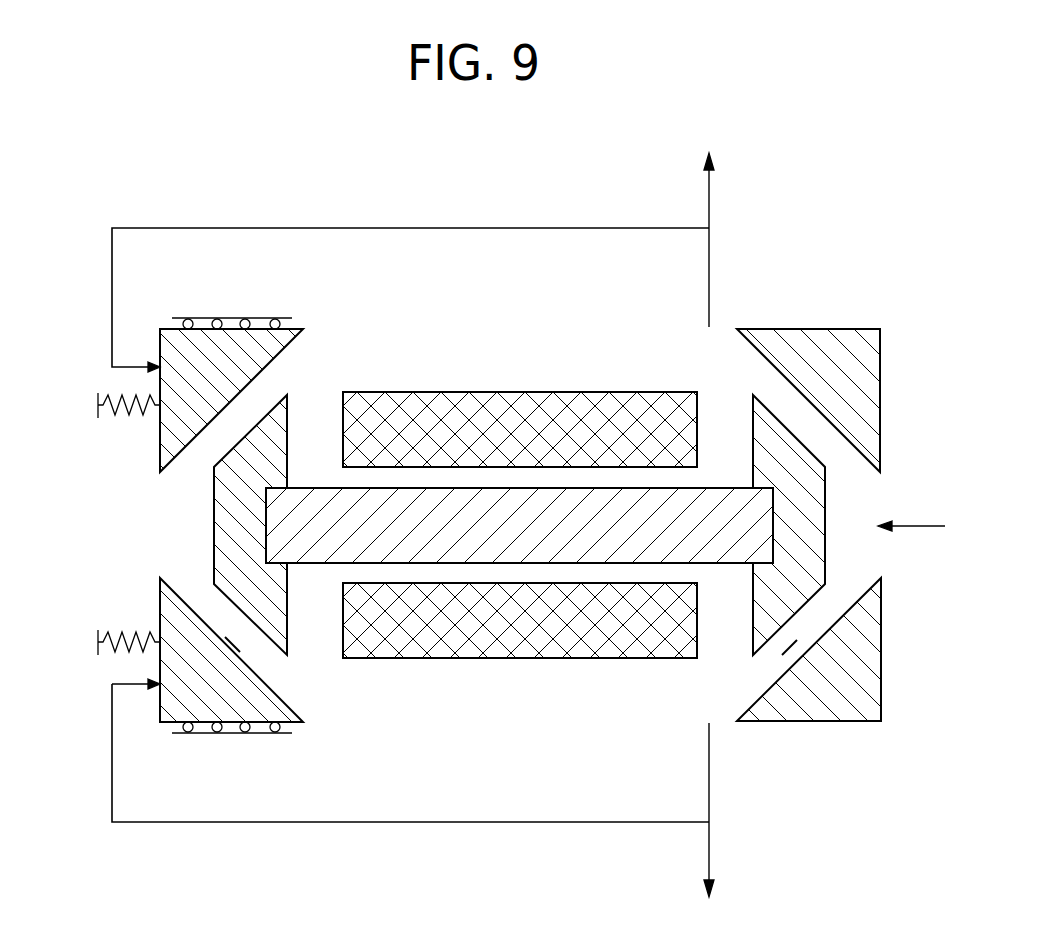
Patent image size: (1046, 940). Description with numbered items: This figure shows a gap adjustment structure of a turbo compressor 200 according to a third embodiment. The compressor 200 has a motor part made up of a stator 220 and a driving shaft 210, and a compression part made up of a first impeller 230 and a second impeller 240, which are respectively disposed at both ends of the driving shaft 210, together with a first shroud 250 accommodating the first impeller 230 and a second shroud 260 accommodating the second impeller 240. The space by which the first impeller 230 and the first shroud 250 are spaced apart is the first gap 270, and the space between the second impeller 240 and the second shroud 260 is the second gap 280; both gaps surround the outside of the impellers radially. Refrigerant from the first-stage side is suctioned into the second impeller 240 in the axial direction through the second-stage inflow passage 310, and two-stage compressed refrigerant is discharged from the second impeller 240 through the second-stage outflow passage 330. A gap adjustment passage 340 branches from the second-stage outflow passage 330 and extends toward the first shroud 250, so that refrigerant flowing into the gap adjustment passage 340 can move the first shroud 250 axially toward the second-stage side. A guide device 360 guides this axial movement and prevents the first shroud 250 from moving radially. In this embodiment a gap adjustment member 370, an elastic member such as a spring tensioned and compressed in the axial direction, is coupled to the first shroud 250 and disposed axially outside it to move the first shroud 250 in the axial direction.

The compressor 200 is at (191, 141).
The driving shaft 210 is at (312, 500).
The stator 220 is at (510, 415).
The first impeller 230 is at (225, 520).
The second impeller 240 is at (808, 551).
The first shroud 250 is at (172, 348).
The second shroud 260 is at (826, 352).
The first gap 270 is at (237, 632).
The second gap 280 is at (797, 647).
The second-stage inflow passage 310 is at (930, 523).
The second-stage outflow passage 330 is at (709, 257).
The gap adjustment passage 340 is at (373, 228).
The guide device 360 is at (230, 317).
The gap adjustment member 370 is at (98, 405).